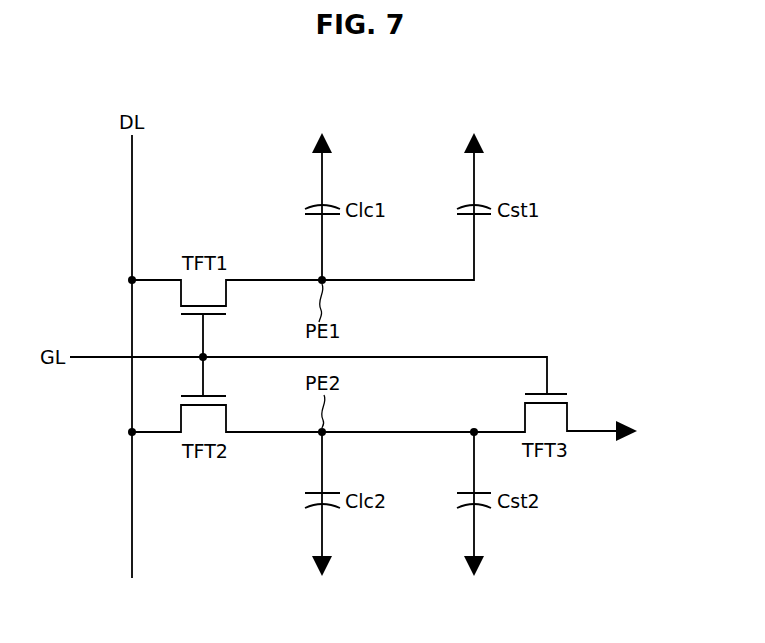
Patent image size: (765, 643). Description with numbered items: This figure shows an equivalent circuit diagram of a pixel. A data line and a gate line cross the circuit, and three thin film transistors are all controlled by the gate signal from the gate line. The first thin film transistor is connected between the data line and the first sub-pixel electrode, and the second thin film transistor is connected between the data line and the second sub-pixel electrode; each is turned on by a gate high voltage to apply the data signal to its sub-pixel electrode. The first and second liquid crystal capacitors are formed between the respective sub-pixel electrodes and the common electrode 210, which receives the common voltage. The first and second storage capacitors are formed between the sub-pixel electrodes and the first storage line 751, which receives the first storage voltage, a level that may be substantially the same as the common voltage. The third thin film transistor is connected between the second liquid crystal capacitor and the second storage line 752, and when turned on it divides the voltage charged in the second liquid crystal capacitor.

The common electrode 210 is at (329, 139).
The first storage line 751 is at (481, 139).
The second storage line 752 is at (627, 418).